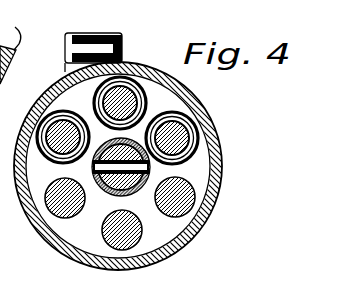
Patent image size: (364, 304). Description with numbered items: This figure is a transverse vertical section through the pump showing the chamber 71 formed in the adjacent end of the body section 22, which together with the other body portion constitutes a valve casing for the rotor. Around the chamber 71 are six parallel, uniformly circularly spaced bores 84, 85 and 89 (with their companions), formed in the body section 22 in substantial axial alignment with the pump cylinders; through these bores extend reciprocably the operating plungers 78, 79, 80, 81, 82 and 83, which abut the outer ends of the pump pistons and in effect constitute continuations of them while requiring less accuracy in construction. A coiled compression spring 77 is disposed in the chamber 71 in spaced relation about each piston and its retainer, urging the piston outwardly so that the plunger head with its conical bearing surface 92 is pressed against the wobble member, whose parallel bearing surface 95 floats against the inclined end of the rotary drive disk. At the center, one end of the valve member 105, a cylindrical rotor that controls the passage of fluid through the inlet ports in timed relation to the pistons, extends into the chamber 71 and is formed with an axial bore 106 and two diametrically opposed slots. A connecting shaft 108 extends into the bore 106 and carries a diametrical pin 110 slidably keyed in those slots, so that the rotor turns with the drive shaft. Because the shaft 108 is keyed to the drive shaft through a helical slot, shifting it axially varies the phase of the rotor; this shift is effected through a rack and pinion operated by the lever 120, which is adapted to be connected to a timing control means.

The body section 22 is at (57, 254).
The chamber 71 is at (60, 229).
The coiled compression spring 77 is at (64, 114).
The operating plunger 78 is at (103, 237).
The operating plunger 79 is at (169, 217).
The operating plunger 80 is at (179, 156).
The operating plunger 81 is at (141, 103).
The operating plunger 82 is at (64, 161).
The operating plunger 83 is at (58, 187).
The bore 84 is at (107, 219).
The bore 85 is at (190, 184).
The bore 89 is at (84, 200).
The conical bearing surface 92 is at (10, 30).
The parallel bearing surface 95 is at (8, 56).
The valve member 105 is at (127, 193).
The axial bore 106 is at (126, 150).
The connecting shaft 108 is at (117, 146).
The diametrical pin 110 is at (92, 167).
The lever 120 is at (93, 34).